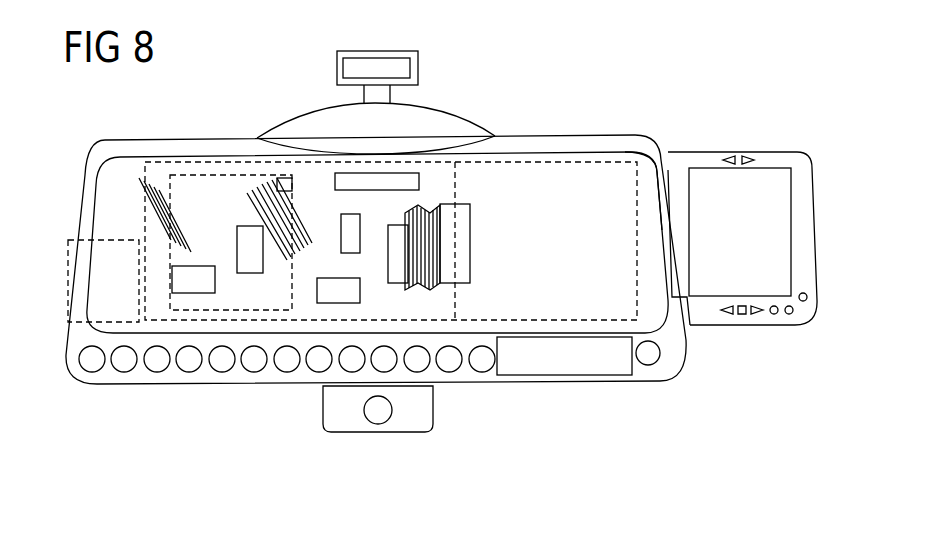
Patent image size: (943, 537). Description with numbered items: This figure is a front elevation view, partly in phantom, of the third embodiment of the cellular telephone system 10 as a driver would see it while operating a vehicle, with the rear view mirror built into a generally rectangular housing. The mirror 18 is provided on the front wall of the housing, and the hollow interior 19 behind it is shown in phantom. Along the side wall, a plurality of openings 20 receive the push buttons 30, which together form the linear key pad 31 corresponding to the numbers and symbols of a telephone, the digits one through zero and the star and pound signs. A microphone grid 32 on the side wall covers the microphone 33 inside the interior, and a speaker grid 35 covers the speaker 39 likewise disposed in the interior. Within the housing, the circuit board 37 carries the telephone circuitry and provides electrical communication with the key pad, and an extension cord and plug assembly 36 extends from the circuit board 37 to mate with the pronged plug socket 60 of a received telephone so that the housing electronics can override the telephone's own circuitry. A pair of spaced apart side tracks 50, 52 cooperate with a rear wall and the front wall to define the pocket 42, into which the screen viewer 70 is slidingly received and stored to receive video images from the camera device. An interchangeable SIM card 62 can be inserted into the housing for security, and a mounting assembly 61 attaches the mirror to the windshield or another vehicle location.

The cellular telephone system 10 is at (600, 104).
The mirror 18 is at (181, 192).
The hollow interior 19 is at (110, 200).
The openings 20 is at (273, 400).
The push buttons 30 is at (135, 366).
The linear key pad 31 is at (246, 366).
The microphone grid 32 is at (687, 350).
The microphone 33 is at (674, 348).
The speaker grid 35 is at (443, 122).
The extension cord and plug assembly 36 is at (437, 290).
The circuit board 37 is at (335, 181).
The speaker 39 is at (378, 150).
The pocket 42 is at (657, 160).
The side track 50 is at (631, 143).
The side track 52 is at (517, 320).
The plug socket 60 is at (470, 245).
The mounting assembly 61 is at (337, 70).
The SIM card 62 is at (66, 262).
The screen viewer 70 is at (803, 157).